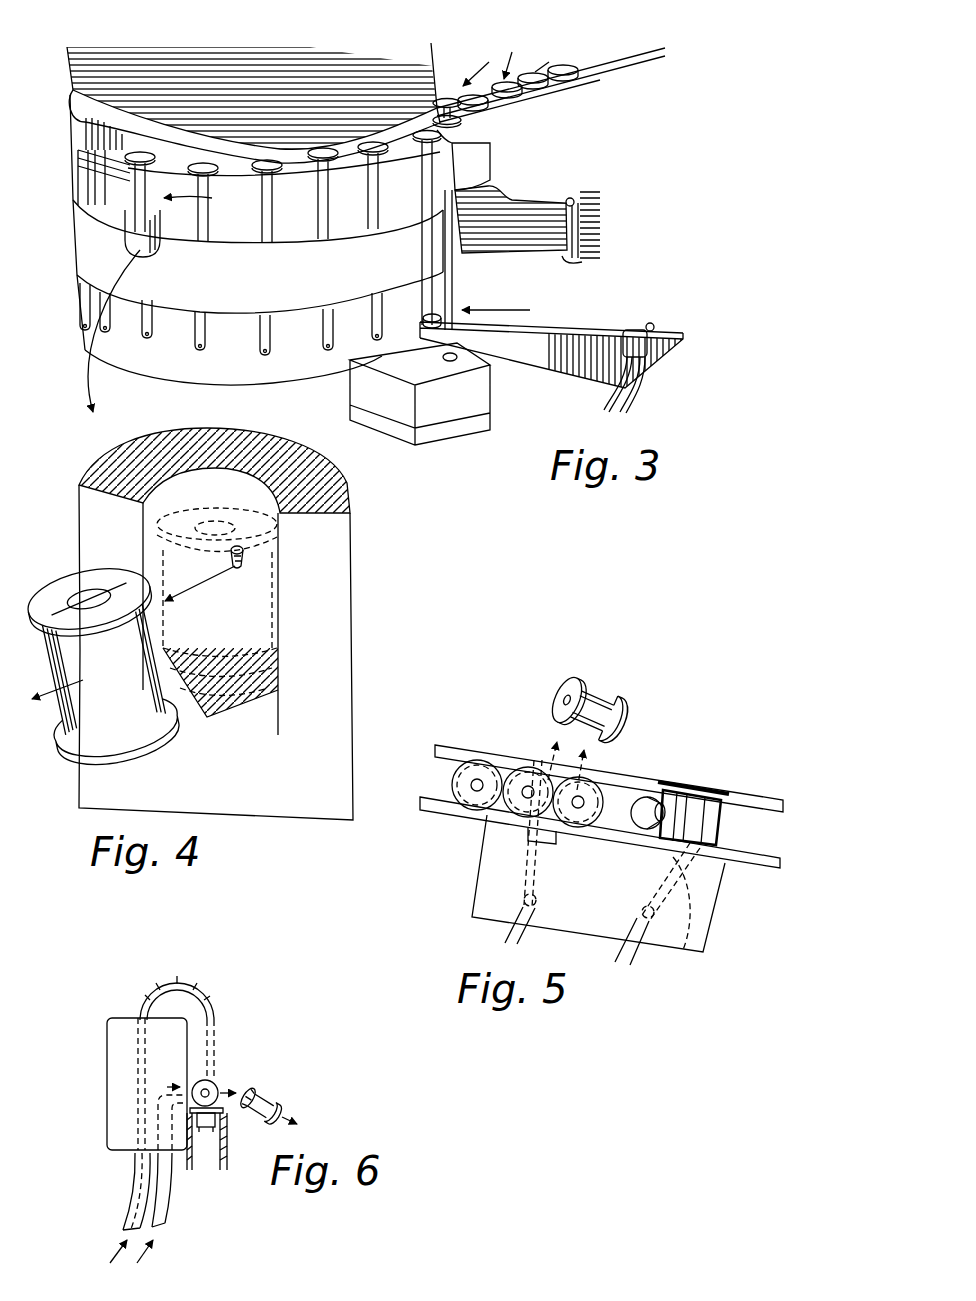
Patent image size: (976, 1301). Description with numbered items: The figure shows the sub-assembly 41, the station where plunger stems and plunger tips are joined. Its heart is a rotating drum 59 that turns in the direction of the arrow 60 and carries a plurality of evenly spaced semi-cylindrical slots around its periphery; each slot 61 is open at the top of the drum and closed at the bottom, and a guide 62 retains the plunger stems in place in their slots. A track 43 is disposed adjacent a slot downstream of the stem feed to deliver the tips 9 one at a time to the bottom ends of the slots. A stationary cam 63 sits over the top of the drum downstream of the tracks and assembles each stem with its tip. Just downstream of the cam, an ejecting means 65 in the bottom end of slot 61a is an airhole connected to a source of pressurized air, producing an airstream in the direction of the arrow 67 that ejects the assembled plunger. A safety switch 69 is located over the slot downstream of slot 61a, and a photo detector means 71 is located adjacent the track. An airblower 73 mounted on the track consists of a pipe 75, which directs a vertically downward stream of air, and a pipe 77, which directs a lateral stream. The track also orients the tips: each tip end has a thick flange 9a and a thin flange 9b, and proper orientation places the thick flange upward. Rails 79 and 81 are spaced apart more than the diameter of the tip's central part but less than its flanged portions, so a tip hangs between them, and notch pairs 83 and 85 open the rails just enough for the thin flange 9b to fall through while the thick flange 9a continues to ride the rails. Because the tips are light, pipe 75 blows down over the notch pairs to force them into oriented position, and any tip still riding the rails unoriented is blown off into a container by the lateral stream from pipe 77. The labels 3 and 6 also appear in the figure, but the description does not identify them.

In FIG. 3, the bobbin 3 is at (613, 78).
In FIG. 3, the spindle pin 6 is at (335, 316).
In FIG. 3, the tips 9 is at (263, 357).
In FIG. 5, the tips 9 is at (560, 721).
In FIG. 5, the thick flange 9a is at (570, 678).
In FIG. 5, the thin flange 9b is at (614, 702).
In FIG. 3, the sub-assembly 41 is at (530, 70).
In FIG. 3, the track 43 is at (551, 334).
In FIG. 5, the track 43 is at (583, 816).
In FIG. 3, the rotating drum 59 is at (302, 365).
In FIG. 3, the arrow 60 is at (203, 192).
In FIG. 3, the slot 61 is at (98, 172).
In FIG. 3, the slot 61a is at (151, 340).
In FIG. 4, the slot 61a is at (262, 491).
In FIG. 3, the guide 62 is at (285, 256).
In FIG. 3, the cam 63 is at (201, 158).
In FIG. 4, the ejecting means 65 is at (248, 567).
In FIG. 4, the arrow 67 is at (195, 582).
In FIG. 3, the safety switch 69 is at (136, 130).
In FIG. 3, the photo detector means 71 is at (478, 403).
In FIG. 3, the airblower 73 is at (648, 348).
In FIG. 6, the airblower 73 is at (180, 1094).
In FIG. 5, the pipe 75 is at (683, 960).
In FIG. 6, the pipe 75 is at (201, 985).
In FIG. 5, the pipe 77 is at (545, 878).
In FIG. 6, the pipe 77 is at (162, 1097).
In FIG. 3, the rail 79 is at (603, 330).
In FIG. 5, the rail 79 is at (453, 747).
In FIG. 3, the rail 81 is at (568, 341).
In FIG. 5, the rail 81 is at (437, 813).
In FIG. 5, the notch pair 83 is at (663, 797).
In FIG. 5, the notch pair 85 is at (727, 793).